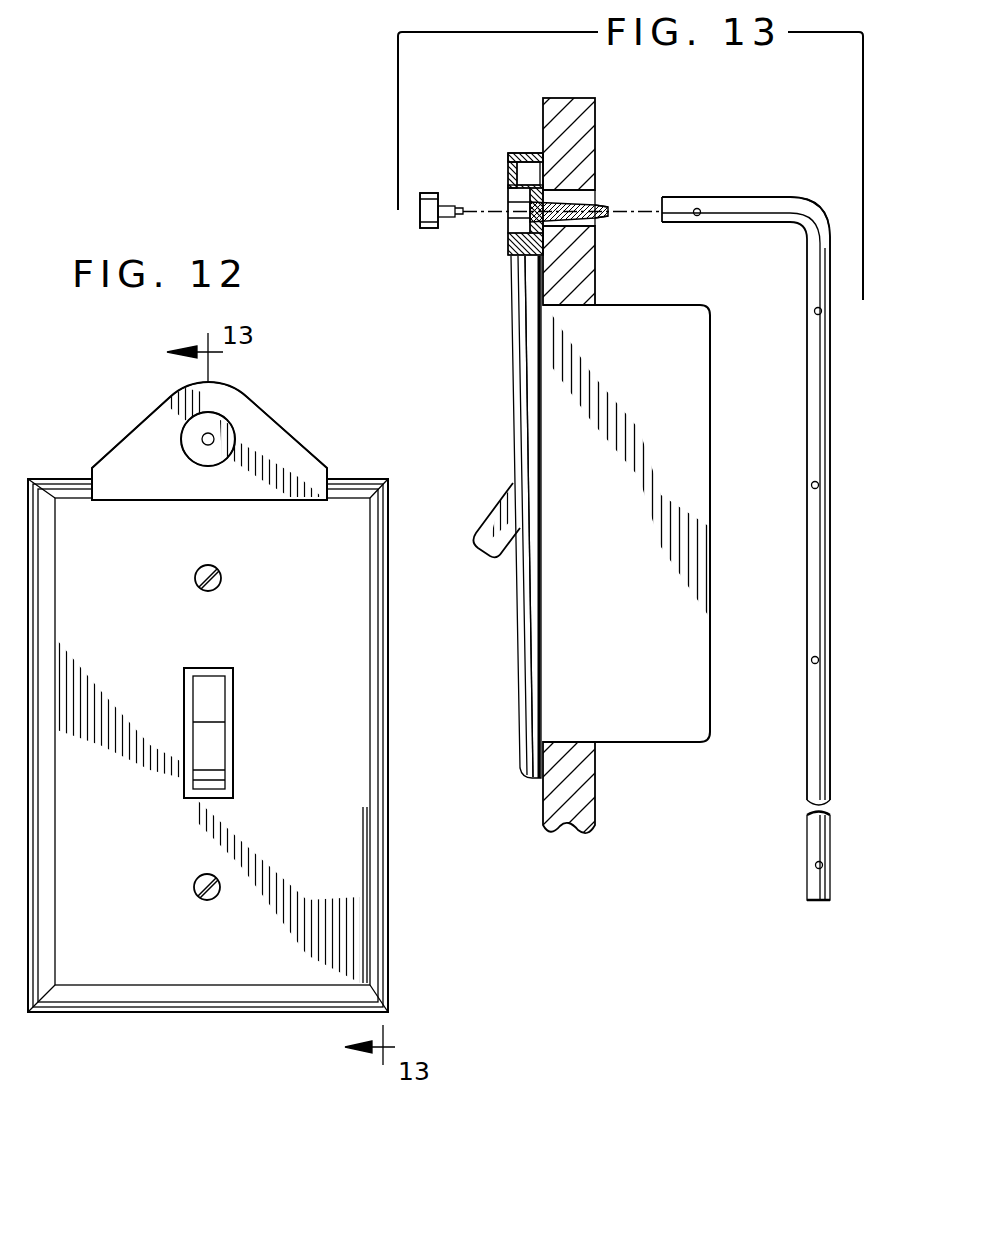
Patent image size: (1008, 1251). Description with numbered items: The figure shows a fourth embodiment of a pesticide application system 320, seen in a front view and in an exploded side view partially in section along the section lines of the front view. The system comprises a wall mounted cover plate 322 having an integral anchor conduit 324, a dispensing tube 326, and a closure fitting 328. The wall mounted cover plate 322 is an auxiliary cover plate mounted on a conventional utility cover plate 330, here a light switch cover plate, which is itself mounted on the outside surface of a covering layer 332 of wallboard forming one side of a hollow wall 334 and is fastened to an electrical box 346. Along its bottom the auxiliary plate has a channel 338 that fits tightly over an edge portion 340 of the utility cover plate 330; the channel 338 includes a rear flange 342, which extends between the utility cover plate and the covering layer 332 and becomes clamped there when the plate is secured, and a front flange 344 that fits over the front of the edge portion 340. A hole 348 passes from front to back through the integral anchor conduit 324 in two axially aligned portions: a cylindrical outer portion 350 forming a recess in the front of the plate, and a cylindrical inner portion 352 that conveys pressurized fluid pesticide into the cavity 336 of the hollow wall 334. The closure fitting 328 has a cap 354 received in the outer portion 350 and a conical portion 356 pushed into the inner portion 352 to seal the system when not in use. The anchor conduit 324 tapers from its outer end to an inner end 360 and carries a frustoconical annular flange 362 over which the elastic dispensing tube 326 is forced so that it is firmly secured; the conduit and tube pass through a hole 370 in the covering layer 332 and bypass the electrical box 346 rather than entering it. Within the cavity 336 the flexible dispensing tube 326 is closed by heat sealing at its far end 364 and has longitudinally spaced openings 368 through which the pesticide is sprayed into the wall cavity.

In FIG. 12, the pesticide application system 320 is at (268, 366).
In FIG. 13, the pesticide application system 320 is at (740, 148).
In FIG. 12, the wall mounted cover plate 322 is at (150, 408).
In FIG. 13, the wall mounted cover plate 322 is at (514, 153).
In FIG. 13, the integral anchor conduit 324 is at (606, 200).
In FIG. 13, the dispensing tube 326 is at (814, 204).
In FIG. 13, the closure fitting 328 is at (425, 193).
In FIG. 12, the utility cover plate 330 is at (333, 658).
In FIG. 13, the utility cover plate 330 is at (516, 668).
In FIG. 13, the covering layer 332 is at (568, 118).
In FIG. 13, the hollow wall 334 is at (540, 848).
In FIG. 13, the cavity 336 is at (760, 284).
In FIG. 13, the channel 338 is at (520, 280).
In FIG. 13, the edge portion 340 is at (521, 282).
In FIG. 13, the rear flange 342 is at (538, 258).
In FIG. 13, the front flange 344 is at (508, 255).
In FIG. 13, the electrical box 346 is at (652, 592).
In FIG. 12, the hole 348 is at (240, 418).
In FIG. 13, the hole 348 is at (498, 236).
In FIG. 12, the outer portion 350 is at (225, 447).
In FIG. 13, the outer portion 350 is at (512, 196).
In FIG. 12, the inner portion 352 is at (202, 440).
In FIG. 13, the inner portion 352 is at (612, 210).
In FIG. 13, the cap 354 is at (428, 228).
In FIG. 13, the conical portion 356 is at (508, 182).
In FIG. 13, the inner end 360 is at (668, 212).
In FIG. 13, the annular flange 362 is at (600, 222).
In FIG. 13, the far end 364 is at (806, 892).
In FIG. 13, the openings 368 is at (698, 208).
In FIG. 13, the hole 370 is at (578, 190).